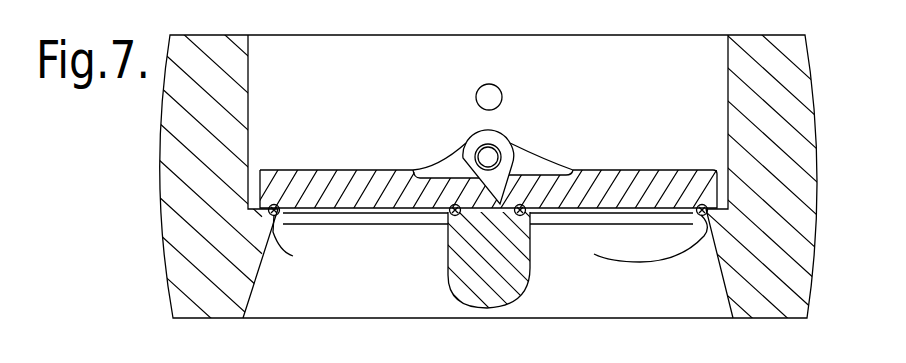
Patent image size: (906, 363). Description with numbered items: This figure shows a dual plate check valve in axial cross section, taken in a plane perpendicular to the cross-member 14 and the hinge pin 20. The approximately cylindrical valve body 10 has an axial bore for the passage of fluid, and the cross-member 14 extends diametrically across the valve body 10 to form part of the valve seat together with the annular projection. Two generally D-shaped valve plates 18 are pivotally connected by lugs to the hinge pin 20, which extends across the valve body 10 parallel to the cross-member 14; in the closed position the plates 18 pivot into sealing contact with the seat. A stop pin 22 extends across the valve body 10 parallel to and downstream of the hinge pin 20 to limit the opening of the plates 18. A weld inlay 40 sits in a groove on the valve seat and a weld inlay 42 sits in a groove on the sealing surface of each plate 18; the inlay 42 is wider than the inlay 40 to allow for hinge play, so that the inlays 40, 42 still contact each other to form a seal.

The valve body 10 is at (178, 300).
The cross-member 14 is at (512, 287).
The valve plates 18 is at (348, 170).
The hinge pin 20 is at (491, 152).
The stop pin 22 is at (490, 85).
The weld inlay 40 is at (448, 243).
The weld inlay 42 is at (275, 204).